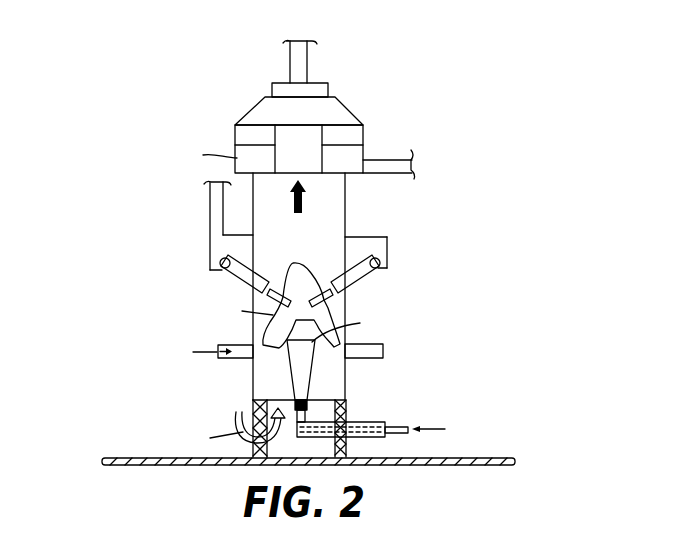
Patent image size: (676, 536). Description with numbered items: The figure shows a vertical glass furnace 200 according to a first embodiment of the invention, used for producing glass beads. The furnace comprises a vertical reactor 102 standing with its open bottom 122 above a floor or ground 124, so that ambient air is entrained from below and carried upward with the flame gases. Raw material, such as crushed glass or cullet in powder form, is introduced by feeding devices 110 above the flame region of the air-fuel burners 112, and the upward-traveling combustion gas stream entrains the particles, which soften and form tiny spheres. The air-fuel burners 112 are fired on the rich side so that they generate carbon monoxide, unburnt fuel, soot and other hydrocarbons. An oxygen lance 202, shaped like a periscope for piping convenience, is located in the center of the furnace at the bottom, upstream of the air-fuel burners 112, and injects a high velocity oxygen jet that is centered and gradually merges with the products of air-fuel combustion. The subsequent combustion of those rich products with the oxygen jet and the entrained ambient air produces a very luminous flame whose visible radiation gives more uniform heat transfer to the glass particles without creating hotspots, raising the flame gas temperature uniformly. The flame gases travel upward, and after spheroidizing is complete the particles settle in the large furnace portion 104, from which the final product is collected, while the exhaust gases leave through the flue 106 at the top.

The vertical furnace 200 is at (124, 119).
The vertical reactor 102 is at (332, 210).
The large furnace portion 104 is at (347, 130).
The flue 106 is at (298, 63).
The feeding devices 110 is at (247, 282).
The air-fuel burners 112 is at (237, 342).
The open bottom 122 is at (263, 387).
The oxygen lance 202 is at (371, 420).
The floor or ground 124 is at (440, 457).